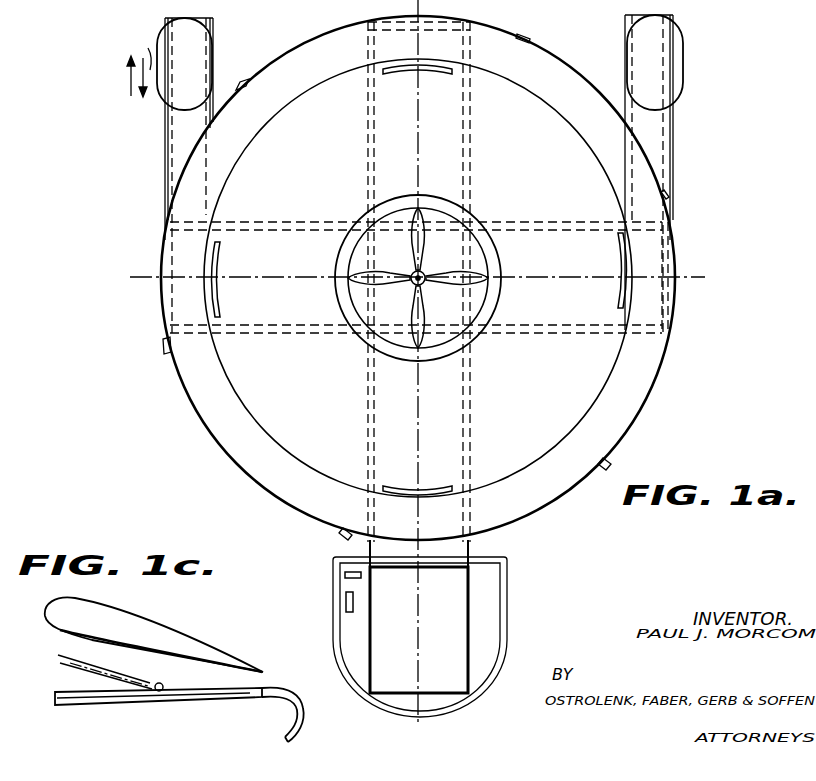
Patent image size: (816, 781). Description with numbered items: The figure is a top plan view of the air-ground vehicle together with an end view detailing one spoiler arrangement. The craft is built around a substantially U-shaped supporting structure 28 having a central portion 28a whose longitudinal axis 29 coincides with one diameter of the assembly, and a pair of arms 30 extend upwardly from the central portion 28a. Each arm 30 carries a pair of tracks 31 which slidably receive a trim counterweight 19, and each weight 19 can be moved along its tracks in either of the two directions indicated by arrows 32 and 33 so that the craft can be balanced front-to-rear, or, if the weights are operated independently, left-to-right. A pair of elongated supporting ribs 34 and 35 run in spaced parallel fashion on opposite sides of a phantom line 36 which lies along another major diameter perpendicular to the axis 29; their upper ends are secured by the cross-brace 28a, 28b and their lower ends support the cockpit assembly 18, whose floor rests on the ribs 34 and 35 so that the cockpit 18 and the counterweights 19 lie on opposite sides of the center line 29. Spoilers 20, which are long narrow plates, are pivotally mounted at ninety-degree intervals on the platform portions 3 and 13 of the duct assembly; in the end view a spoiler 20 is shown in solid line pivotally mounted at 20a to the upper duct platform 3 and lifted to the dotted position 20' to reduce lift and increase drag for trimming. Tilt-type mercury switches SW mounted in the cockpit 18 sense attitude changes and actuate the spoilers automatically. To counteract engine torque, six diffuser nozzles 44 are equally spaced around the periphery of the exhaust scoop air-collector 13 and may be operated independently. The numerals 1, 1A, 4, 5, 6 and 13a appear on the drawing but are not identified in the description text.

In FIG. 1C, the airfoil vane 1 is at (207, 632).
In FIG. 1A, the motor ring 1A is at (479, 339).
In FIG. 1C, the upper duct platform 3 is at (222, 699).
In FIG. 1A, the propeller 4 is at (382, 336).
In FIG. 1A, the inner housing ring 5 is at (636, 276).
In FIG. 1A, the propeller hub 6 is at (425, 273).
In FIG. 1A, the exhaust scoop air-collector member 13 is at (668, 381).
In FIG. 1A, the housing ring portion 13a is at (264, 6).
In FIG. 1A, the cockpit assembly 18 is at (508, 617).
In FIG. 1A, the trim counterweight 19 is at (198, 81).
In FIG. 1A, the spoiler 20 is at (419, 280).
In FIG. 1C, the spoiler 20 is at (138, 692).
In FIG. 1C, the raised spoiler position 20' is at (83, 664).
In FIG. 1C, the spoiler pivot 20a is at (165, 687).
In FIG. 1A, the U-shaped supporting structure 28 is at (352, 344).
In FIG. 1A, the central portion 28a is at (250, 336).
In FIG. 1A, the cross-brace 28b is at (320, 226).
In FIG. 1A, the longitudinal axis 29 is at (318, 260).
In FIG. 1A, the arm 30 is at (165, 172).
In FIG. 1A, the track 31 is at (208, 122).
In FIG. 1A, the direction arrow 32 is at (128, 75).
In FIG. 1A, the direction arrow 33 is at (133, 64).
In FIG. 1A, the supporting rib 34 is at (365, 422).
In FIG. 1A, the supporting rib 35 is at (470, 437).
In FIG. 1A, the phantom line 36 is at (452, 22).
In FIG. 1A, the diffuser nozzle 44 is at (165, 349).
In FIG. 1A, the mercury switch SW is at (344, 577).